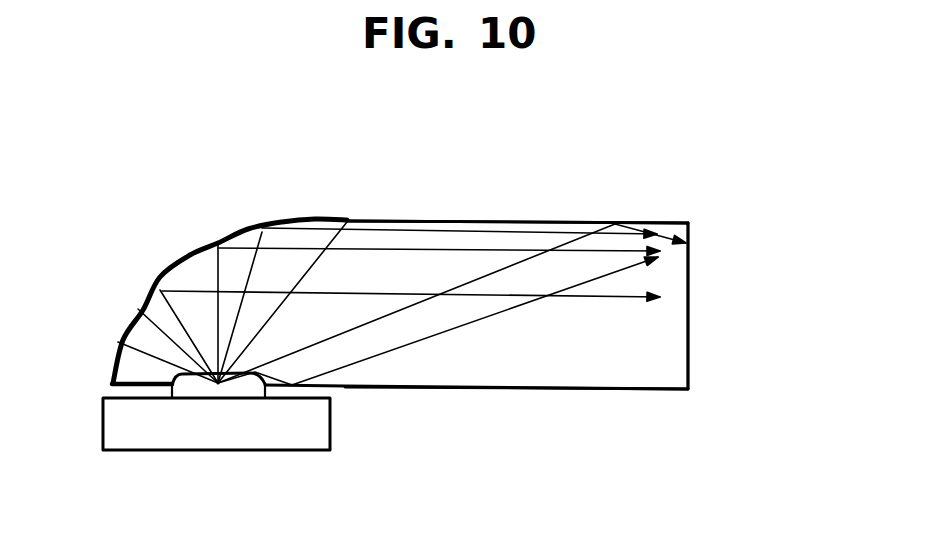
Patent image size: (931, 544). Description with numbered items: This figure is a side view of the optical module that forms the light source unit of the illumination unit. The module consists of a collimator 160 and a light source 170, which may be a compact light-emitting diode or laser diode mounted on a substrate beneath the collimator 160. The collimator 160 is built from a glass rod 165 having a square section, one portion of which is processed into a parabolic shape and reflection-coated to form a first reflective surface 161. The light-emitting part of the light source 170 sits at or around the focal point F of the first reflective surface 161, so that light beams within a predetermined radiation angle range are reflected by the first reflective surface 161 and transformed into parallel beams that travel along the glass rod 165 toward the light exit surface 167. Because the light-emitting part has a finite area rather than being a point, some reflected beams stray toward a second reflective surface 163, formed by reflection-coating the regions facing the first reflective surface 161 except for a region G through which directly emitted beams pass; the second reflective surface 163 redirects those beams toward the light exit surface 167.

The collimator 160 is at (537, 221).
The first reflective surface 161 is at (242, 235).
The second reflective surface 163 is at (335, 388).
The glass rod 165 is at (463, 220).
The light exit surface 167 is at (688, 308).
The light source 170 is at (192, 445).
The focal point F is at (218, 385).
The region G is at (217, 383).